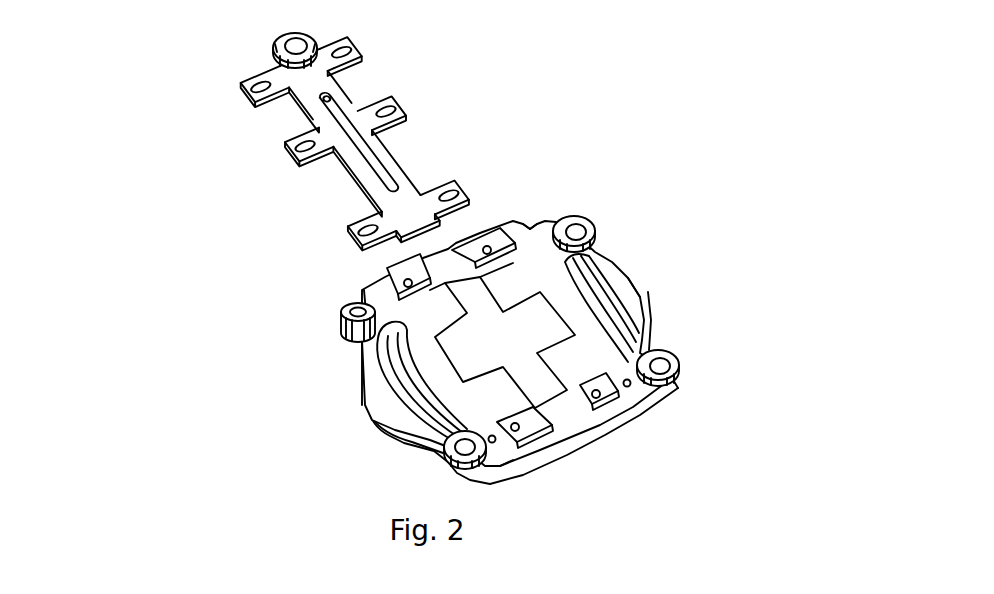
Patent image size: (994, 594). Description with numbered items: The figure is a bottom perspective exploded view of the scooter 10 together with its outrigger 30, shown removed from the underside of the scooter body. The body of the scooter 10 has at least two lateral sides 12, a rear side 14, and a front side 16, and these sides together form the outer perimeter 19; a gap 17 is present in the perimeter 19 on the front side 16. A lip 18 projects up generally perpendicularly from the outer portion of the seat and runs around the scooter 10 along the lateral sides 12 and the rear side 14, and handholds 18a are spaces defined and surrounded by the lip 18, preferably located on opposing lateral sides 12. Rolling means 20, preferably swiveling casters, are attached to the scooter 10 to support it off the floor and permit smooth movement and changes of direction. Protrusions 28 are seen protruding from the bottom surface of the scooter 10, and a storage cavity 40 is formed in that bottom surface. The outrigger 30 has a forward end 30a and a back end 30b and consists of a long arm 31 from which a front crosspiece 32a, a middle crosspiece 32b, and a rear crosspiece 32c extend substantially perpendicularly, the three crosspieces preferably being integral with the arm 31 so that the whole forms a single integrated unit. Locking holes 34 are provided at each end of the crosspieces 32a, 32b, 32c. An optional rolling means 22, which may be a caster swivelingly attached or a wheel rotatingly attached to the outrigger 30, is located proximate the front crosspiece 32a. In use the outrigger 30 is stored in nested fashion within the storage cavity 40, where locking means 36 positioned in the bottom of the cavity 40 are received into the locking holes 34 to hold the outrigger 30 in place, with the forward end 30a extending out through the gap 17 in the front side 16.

The scooter 10 is at (675, 110).
The lateral sides 12 is at (724, 283).
The rear side 14 is at (647, 474).
The front side 16 is at (323, 257).
The gap 17 is at (533, 222).
The lip 18 is at (423, 436).
The handholds 18a is at (373, 424).
The outer perimeter 19 is at (638, 283).
The rolling means 20 is at (596, 222).
The rolling means 22 is at (281, 36).
The protrusions 28 is at (640, 303).
The outrigger 30 is at (168, 99).
The forward end 30a is at (268, 55).
The back end 30b is at (478, 214).
The long arm 31 is at (353, 163).
The front crosspiece 32a is at (360, 42).
The middle crosspiece 32b is at (402, 102).
The rear crosspiece 32c is at (464, 186).
The locking holes 34 is at (289, 145).
The locking means 36 is at (552, 216).
The storage cavity 40 is at (487, 348).